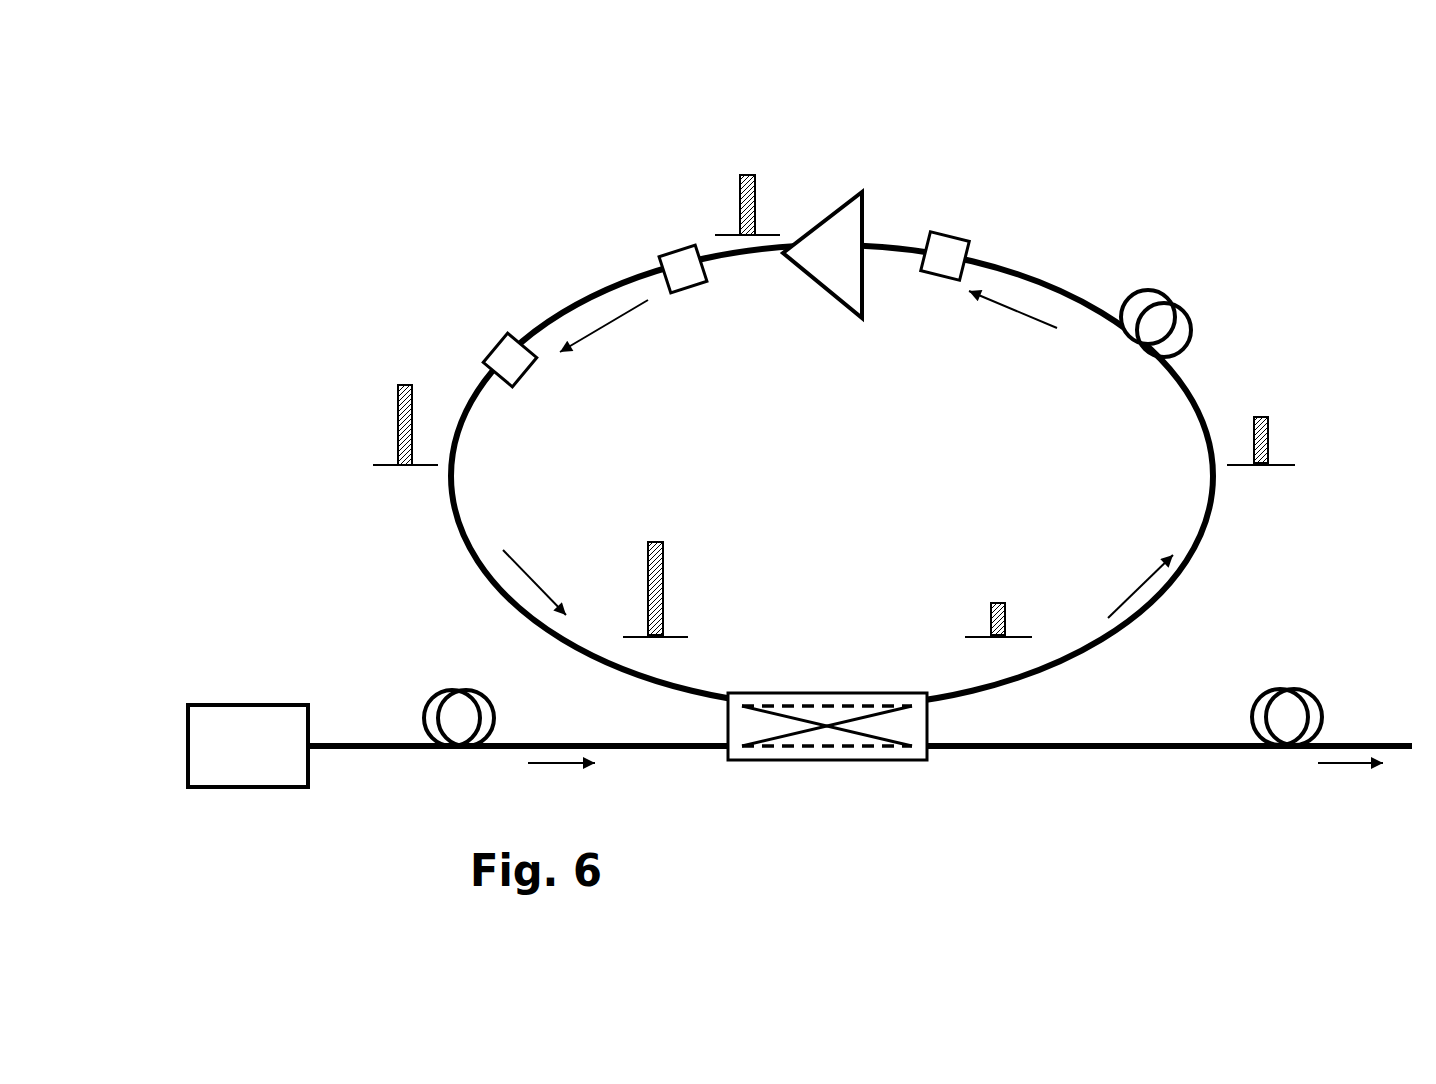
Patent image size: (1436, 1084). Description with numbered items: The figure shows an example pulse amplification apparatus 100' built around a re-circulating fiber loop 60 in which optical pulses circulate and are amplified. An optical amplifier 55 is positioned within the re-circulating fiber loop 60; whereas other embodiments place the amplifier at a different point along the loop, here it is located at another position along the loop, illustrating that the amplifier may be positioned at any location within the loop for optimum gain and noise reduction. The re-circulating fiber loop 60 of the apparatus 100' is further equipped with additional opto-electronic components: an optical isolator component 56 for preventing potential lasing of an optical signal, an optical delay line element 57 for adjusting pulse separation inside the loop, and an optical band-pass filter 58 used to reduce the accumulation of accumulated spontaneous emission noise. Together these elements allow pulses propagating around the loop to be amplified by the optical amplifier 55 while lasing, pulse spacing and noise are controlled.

The pulse amplification apparatus 100' is at (800, 466).
The optical amplifier 55 is at (833, 237).
The optical isolator component 56 is at (950, 250).
The optical delay line element 57 is at (518, 355).
The optical band-pass filter 58 is at (677, 263).
The re-circulating fiber loop 60 is at (1202, 552).